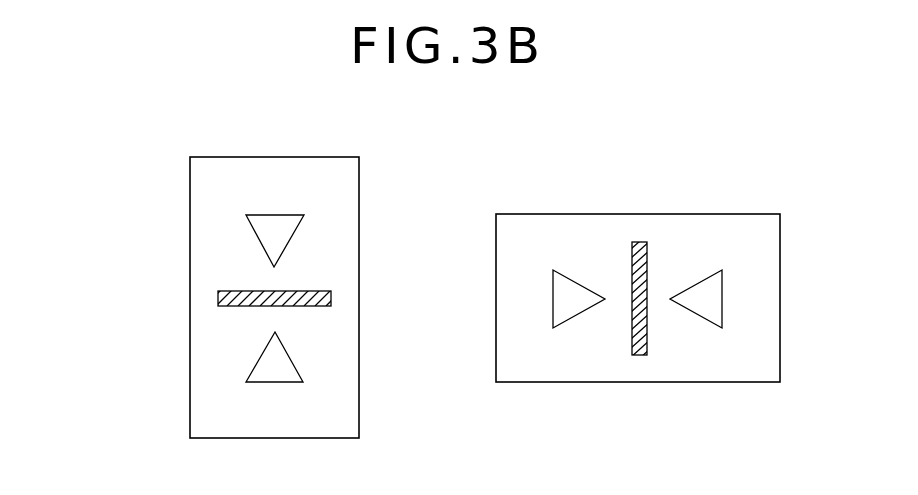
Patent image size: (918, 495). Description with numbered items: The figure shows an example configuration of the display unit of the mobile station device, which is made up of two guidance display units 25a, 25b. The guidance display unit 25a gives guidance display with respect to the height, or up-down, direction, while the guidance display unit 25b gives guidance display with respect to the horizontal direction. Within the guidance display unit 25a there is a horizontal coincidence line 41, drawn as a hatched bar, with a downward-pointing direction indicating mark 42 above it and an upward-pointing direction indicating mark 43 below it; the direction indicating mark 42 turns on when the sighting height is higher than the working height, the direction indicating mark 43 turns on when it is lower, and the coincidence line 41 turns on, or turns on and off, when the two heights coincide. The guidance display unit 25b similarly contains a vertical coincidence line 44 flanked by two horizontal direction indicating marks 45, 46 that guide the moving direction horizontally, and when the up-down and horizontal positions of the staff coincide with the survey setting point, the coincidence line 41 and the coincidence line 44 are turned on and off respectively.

The guidance display unit 25a is at (359, 195).
The guidance display unit 25b is at (673, 214).
The coincidence line 41 is at (317, 291).
The direction indicating mark 42 is at (257, 238).
The direction indicating mark 43 is at (258, 357).
The coincidence line 44 is at (640, 355).
The direction indicating mark 45 is at (703, 318).
The direction indicating mark 46 is at (570, 318).